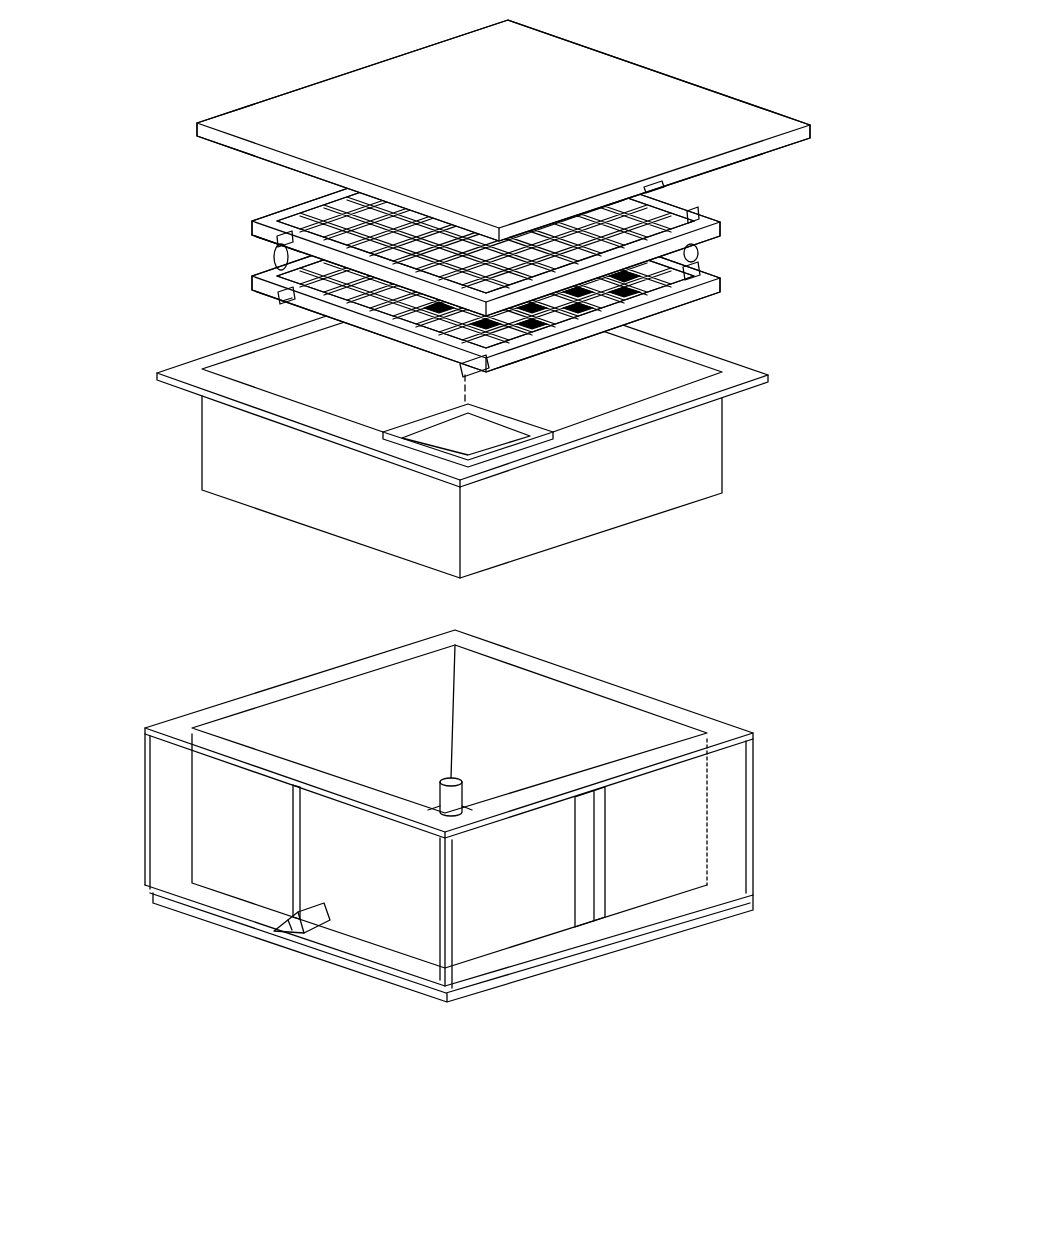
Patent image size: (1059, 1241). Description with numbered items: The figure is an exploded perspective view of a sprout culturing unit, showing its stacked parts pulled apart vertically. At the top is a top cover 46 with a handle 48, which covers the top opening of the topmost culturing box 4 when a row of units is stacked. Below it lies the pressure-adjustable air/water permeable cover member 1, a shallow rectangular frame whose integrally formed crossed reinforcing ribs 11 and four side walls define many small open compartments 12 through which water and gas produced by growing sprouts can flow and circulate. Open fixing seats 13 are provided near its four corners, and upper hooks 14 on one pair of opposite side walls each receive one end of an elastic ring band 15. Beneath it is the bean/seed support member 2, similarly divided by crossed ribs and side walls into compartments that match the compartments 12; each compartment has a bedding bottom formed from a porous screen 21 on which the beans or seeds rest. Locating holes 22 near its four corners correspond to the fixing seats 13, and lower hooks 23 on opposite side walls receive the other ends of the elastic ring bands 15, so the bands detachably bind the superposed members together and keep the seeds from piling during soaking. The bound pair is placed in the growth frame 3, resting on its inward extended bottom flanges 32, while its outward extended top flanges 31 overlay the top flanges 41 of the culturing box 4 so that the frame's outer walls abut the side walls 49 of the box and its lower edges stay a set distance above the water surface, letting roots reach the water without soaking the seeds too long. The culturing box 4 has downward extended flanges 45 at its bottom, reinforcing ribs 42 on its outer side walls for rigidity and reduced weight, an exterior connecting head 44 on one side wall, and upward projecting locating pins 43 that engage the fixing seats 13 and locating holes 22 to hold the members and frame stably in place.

The pressure-adjustable air/water permeable cover member 1 is at (483, 226).
The crossed reinforcing ribs 11 is at (330, 210).
The small open compartments 12 is at (345, 192).
The open fixing seats 13 is at (300, 226).
The upper hooks 14 is at (278, 240).
The elastic ring band 15 is at (272, 258).
The bean/seed support member 2 is at (493, 286).
The porous screen 21 is at (655, 323).
The locating holes 22 is at (252, 284).
The lower hooks 23 is at (283, 300).
The growth frame 3 is at (404, 424).
The outward extended top flanges 31 is at (215, 357).
The inward extended bottom flanges 32 is at (440, 418).
The culturing box 4 is at (424, 866).
The outward extended top flanges 41 is at (218, 708).
The reinforcing ribs 42 is at (145, 808).
The locating pins 43 is at (462, 788).
The exterior connecting head 44 is at (274, 931).
The downward extended flanges 45 is at (370, 975).
The top cover 46 is at (542, 120).
The handle 48 is at (660, 183).
The side walls 49 is at (212, 843).